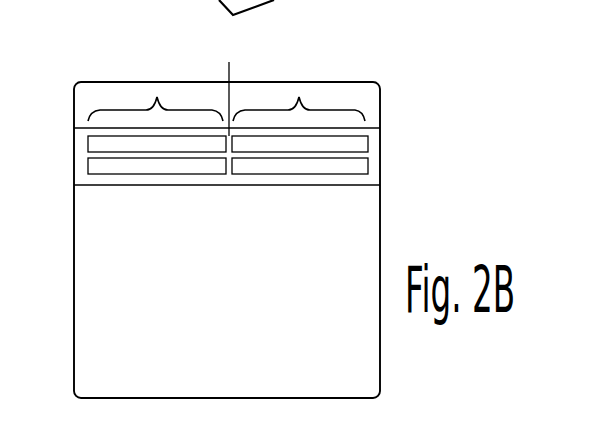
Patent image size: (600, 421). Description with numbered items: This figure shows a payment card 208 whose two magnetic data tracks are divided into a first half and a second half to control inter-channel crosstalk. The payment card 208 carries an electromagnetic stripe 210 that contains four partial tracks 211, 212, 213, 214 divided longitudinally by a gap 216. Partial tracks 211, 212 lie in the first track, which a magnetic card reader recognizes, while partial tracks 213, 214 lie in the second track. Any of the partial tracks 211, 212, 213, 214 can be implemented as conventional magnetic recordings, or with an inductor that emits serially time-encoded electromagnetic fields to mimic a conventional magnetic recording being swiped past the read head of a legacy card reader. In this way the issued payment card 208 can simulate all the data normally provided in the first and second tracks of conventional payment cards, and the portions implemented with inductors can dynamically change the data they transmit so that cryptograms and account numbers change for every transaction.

The payment card 208 is at (208, 285).
The electromagnetic stripe 210 is at (76, 179).
The partial track 211 is at (103, 146).
The partial track 212 is at (275, 145).
The partial track 213 is at (135, 167).
The partial track 214 is at (315, 167).
The gap 216 is at (229, 165).